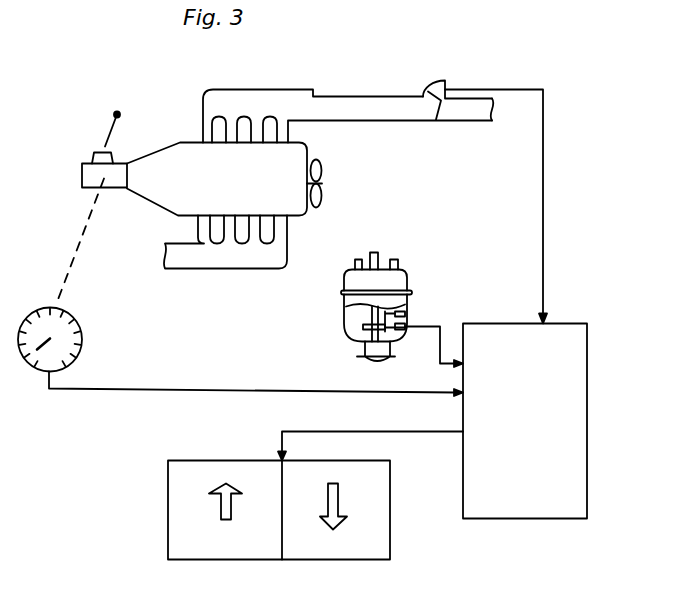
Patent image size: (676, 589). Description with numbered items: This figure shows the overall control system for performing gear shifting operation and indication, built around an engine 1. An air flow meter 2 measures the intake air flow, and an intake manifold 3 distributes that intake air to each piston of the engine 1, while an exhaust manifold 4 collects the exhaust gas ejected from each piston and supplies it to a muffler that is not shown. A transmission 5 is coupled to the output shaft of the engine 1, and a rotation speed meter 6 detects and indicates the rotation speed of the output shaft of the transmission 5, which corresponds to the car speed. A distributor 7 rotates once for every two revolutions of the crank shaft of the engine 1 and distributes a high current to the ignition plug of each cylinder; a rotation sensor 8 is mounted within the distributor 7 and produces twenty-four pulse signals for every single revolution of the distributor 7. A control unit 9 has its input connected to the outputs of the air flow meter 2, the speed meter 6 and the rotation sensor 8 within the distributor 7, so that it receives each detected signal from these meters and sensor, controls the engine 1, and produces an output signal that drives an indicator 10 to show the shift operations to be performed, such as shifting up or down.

The engine 1 is at (334, 182).
The air flow meter 2 is at (446, 76).
The intake manifold 3 is at (257, 98).
The exhaust manifold 4 is at (237, 255).
The transmission 5 is at (92, 152).
The rotation speed meter 6 is at (83, 338).
The distributor 7 is at (396, 285).
The rotation sensor 8 is at (407, 325).
The control unit 9 is at (577, 413).
The indicator 10 is at (180, 523).